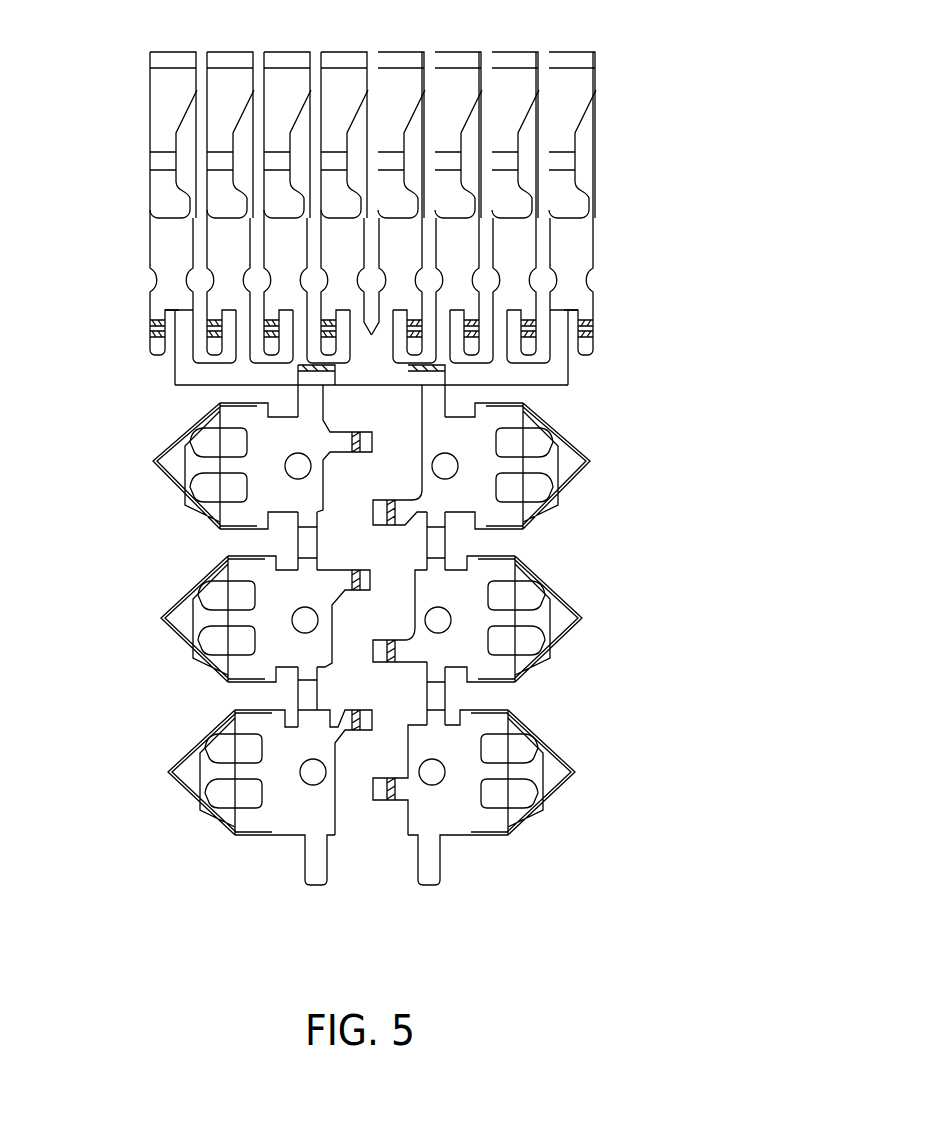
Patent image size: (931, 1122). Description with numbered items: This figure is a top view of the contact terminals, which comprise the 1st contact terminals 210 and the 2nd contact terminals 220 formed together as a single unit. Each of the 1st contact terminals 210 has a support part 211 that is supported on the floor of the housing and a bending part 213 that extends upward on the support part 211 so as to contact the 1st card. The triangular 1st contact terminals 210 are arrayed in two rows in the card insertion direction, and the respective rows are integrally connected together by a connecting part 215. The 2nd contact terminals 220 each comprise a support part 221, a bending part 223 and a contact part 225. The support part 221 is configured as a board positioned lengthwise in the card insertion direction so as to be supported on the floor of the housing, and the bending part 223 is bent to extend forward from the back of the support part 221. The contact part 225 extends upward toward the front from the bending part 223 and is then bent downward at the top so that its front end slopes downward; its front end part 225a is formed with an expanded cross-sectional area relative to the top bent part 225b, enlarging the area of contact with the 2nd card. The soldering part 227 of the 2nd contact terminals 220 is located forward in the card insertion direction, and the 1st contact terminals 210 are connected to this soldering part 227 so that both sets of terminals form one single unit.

The 1st contact terminals 210 is at (324, 635).
The support part 211 is at (282, 840).
The bending part 213 is at (166, 768).
The connecting part 215 is at (296, 690).
The 2nd contact terminals 220 is at (456, 210).
The support part 221 is at (598, 246).
The bending part 223 is at (597, 51).
The contact part 225 is at (578, 136).
The front end part 225a is at (570, 205).
The top bent part 225b is at (566, 160).
The soldering part 227 is at (425, 372).